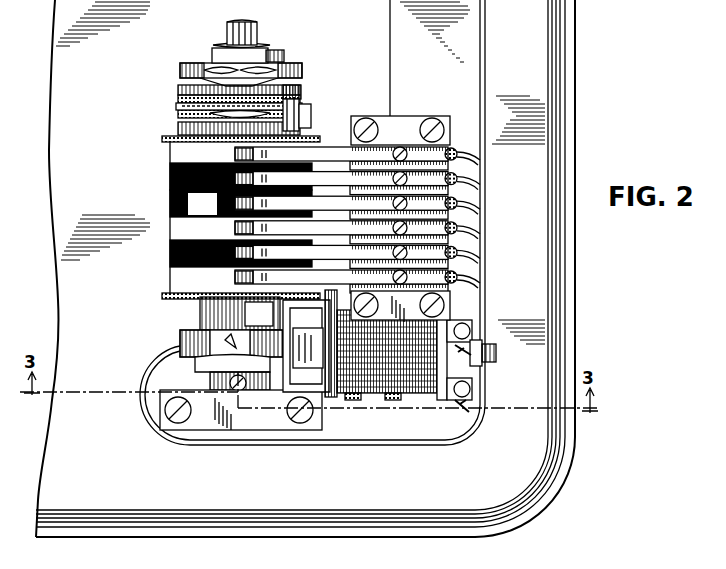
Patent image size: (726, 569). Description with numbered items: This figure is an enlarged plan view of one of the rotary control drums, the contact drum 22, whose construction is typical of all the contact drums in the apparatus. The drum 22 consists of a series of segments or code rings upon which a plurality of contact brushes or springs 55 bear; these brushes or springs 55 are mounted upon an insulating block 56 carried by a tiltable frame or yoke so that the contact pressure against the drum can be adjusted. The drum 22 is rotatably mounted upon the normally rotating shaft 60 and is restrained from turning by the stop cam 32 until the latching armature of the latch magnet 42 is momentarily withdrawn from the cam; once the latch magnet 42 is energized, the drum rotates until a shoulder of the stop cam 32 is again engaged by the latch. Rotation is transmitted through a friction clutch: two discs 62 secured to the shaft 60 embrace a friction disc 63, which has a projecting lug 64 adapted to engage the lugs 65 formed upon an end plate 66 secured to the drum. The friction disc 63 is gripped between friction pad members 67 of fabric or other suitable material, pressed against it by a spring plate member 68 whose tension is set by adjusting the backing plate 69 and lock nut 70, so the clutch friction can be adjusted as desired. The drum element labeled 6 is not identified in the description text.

The worm gear drum 6 is at (240, 313).
The contact drum 22 is at (168, 176).
The stop cam 32 is at (180, 334).
The latch magnet 42 is at (372, 380).
The contact brushes or springs 55 is at (355, 182).
The insulating block 56 is at (425, 120).
The rotating shaft 60 is at (258, 28).
The discs 62 is at (180, 118).
The friction disc 63 is at (176, 103).
The projecting lug 64 is at (300, 112).
The lugs 65 is at (311, 118).
The end plate 66 is at (178, 127).
The friction pad members 67 is at (302, 92).
The spring plate member 68 is at (196, 82).
The backing plate 69 is at (288, 66).
The lock nut 70 is at (283, 54).